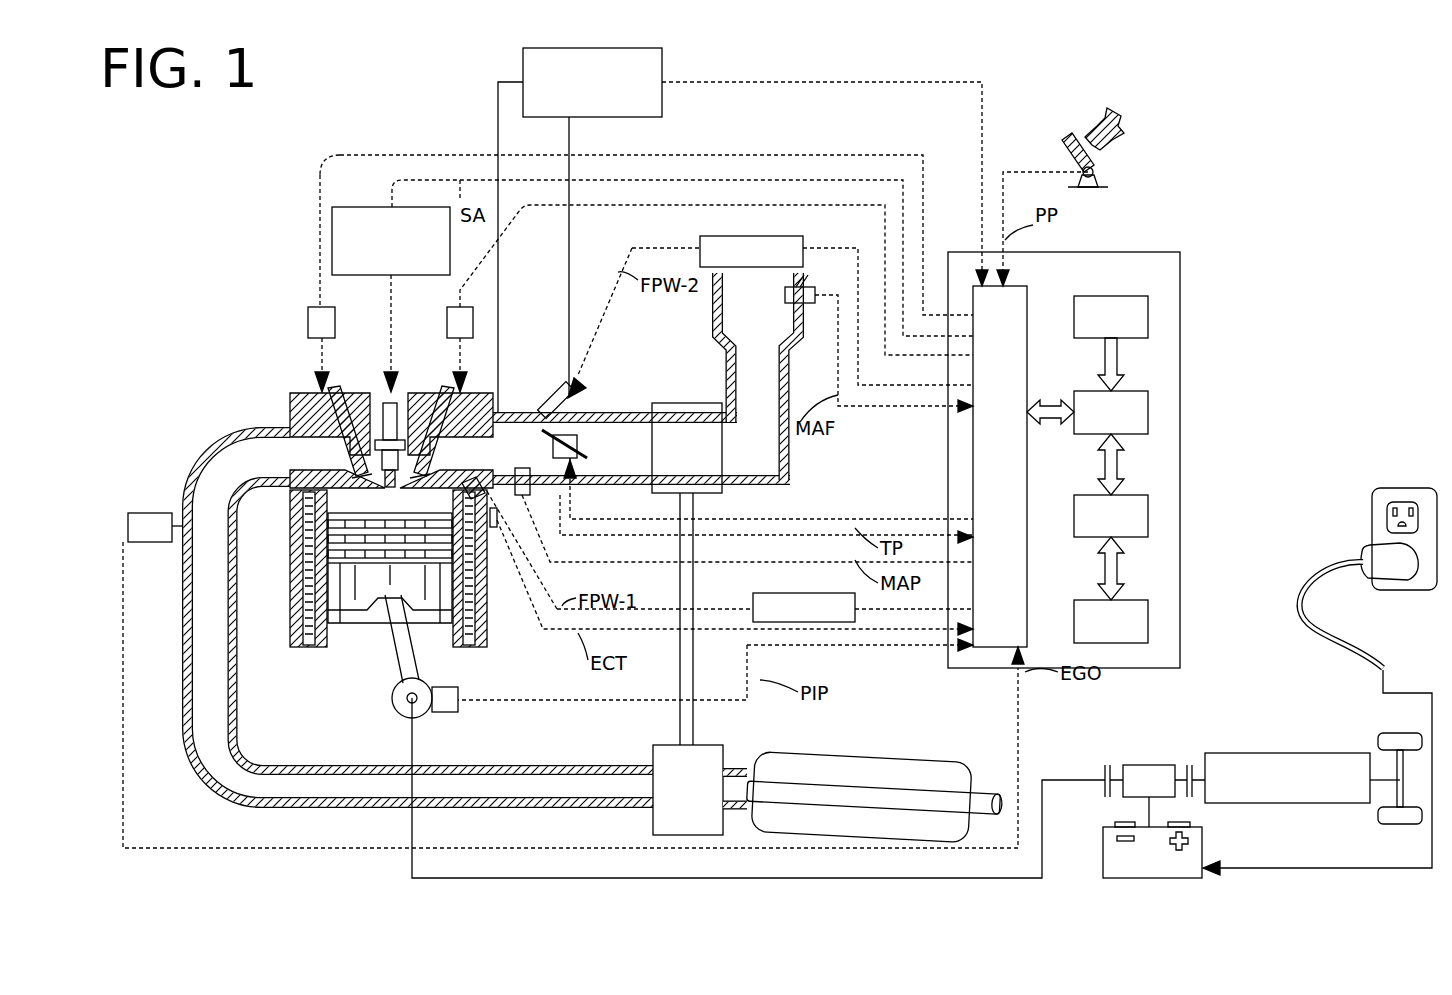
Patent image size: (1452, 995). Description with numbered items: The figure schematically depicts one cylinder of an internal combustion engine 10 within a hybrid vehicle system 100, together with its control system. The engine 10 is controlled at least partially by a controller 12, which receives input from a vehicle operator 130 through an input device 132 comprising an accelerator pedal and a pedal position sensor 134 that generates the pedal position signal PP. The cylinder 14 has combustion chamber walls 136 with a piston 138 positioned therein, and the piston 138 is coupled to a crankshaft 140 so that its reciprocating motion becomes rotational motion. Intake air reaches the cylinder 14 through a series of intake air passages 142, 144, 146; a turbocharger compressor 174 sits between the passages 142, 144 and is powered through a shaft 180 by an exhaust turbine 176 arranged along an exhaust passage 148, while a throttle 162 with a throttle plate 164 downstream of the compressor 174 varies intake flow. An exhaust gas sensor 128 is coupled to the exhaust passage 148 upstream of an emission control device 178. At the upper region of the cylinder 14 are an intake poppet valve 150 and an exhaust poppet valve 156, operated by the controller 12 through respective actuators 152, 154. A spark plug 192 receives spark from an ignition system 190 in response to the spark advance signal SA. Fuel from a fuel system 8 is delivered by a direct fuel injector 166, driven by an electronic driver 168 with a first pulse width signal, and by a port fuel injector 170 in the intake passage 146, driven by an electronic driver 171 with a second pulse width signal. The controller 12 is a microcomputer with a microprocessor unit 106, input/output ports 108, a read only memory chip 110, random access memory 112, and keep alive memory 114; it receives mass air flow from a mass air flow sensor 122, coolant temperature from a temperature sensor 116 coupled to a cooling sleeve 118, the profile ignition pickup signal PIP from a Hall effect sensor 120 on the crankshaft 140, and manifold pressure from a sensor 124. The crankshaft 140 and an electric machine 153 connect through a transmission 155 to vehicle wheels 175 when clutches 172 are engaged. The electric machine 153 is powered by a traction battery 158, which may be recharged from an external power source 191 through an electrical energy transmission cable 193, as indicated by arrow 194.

The fuel system 8 is at (628, 50).
The internal combustion engine 10 is at (218, 340).
The controller 12 is at (1103, 443).
The cylinder 14 is at (302, 520).
The vehicle system 100 is at (248, 182).
The microprocessor unit 106 is at (1148, 412).
The input/output ports 108 is at (1027, 305).
The read only memory chip 110 is at (1148, 320).
The random access memory 112 is at (1148, 520).
The keep alive memory 114 is at (1148, 620).
The temperature sensor 116 is at (497, 527).
The cooling sleeve 118 is at (475, 650).
The Hall effect sensor 120 is at (447, 712).
The mass air flow sensor 122 is at (806, 286).
The manifold pressure sensor 124 is at (545, 520).
The exhaust gas sensor 128 is at (128, 520).
The vehicle operator 130 is at (1125, 135).
The input device 132 is at (1070, 148).
The pedal position sensor 134 is at (1095, 172).
The combustion chamber walls 136 is at (327, 650).
The piston 138 is at (375, 625).
The crankshaft 140 is at (405, 710).
The intake air passage 142 is at (777, 321).
The intake air passage 144 is at (640, 458).
The intake air passage 146 is at (542, 458).
The exhaust passage 148 is at (278, 472).
The intake poppet valve 150 is at (418, 430).
The actuator 152 is at (447, 318).
The electric machine 153 is at (1143, 765).
The actuator 154 is at (308, 315).
The transmission 155 is at (1318, 803).
The exhaust poppet valve 156 is at (312, 412).
The traction battery 158 is at (1193, 878).
The throttle 162 is at (560, 430).
The throttle plate 164 is at (553, 440).
The fuel injector 166 is at (455, 495).
The electronic driver 168 is at (753, 595).
The fuel injector 170 is at (552, 395).
The electronic driver 171 is at (700, 245).
The clutches 172 is at (1105, 768).
The compressor 174 is at (675, 403).
The vehicle wheels 175 is at (1388, 825).
The exhaust turbine 176 is at (653, 820).
The emission control device 178 is at (928, 768).
The shaft 180 is at (695, 705).
The ignition system 190 is at (343, 207).
The power source 191 is at (1372, 512).
The spark plug 192 is at (385, 415).
The electrical energy transmission cable 193 is at (1310, 580).
The arrow 194 is at (1383, 682).